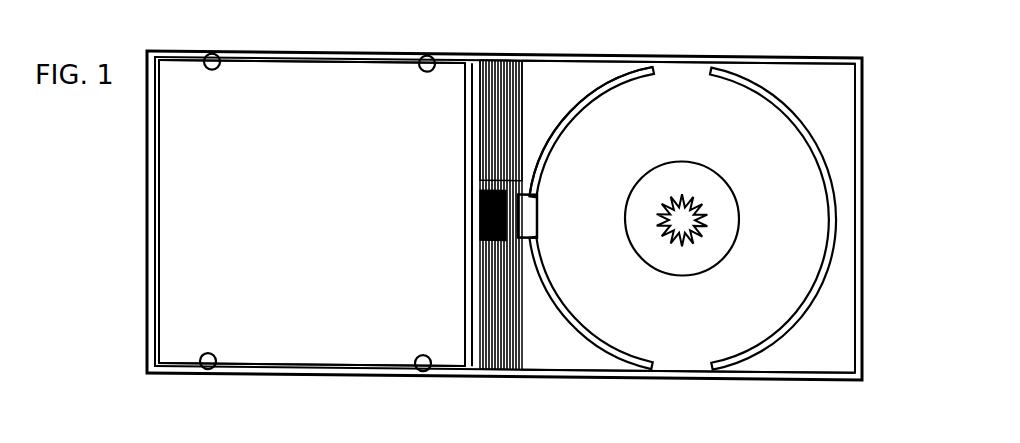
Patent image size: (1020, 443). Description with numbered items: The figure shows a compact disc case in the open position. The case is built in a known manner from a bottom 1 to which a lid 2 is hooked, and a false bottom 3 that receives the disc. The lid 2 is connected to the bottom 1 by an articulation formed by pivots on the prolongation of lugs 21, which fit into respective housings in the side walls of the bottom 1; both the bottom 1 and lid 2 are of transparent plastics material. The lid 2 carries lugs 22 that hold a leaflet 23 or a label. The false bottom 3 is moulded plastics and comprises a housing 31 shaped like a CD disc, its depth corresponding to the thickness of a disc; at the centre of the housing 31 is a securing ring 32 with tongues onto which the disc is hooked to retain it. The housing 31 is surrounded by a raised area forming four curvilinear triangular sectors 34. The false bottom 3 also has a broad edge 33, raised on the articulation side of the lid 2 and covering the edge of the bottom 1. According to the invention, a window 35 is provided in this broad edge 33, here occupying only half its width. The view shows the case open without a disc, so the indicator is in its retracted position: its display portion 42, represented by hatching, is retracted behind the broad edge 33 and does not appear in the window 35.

The bottom 1 is at (845, 51).
The lid 2 is at (358, 48).
The false bottom 3 is at (713, 218).
The lugs 21 is at (500, 53).
The lugs 22 is at (215, 54).
The leaflet 23 is at (307, 222).
The housing 31 is at (737, 112).
The securing ring 32 is at (688, 237).
The broad edge 33 is at (525, 78).
The curvilinear triangular sectors 34 is at (577, 74).
The window 35 is at (480, 168).
The display portion 42 is at (480, 214).